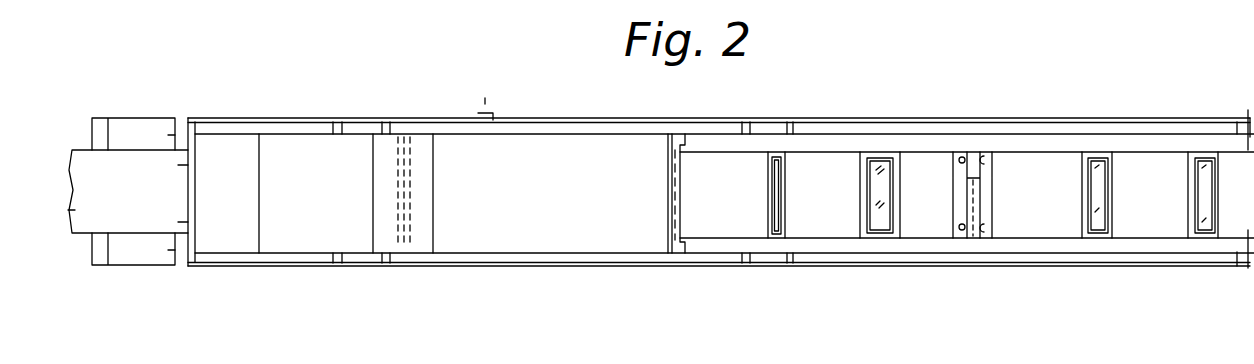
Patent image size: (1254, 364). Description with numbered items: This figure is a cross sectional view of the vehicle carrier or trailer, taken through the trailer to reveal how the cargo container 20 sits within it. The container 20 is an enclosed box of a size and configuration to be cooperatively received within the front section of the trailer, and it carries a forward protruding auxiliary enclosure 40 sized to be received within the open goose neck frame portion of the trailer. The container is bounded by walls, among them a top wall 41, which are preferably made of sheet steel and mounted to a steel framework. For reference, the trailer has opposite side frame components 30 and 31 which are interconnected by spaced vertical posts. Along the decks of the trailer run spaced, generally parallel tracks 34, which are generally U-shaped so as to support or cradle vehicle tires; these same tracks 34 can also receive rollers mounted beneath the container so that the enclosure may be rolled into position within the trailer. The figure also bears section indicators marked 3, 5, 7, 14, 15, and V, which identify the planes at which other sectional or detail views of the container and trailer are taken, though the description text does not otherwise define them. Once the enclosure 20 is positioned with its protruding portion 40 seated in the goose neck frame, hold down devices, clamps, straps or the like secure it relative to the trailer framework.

The forward protruding auxiliary enclosure 40 is at (315, 154).
The cargo container 20 is at (484, 138).
The top wall 41 is at (560, 210).
The wall 14 is at (332, 162).
The section line 7- 7 is at (238, 195).
The section line 5- 5 is at (600, 115).
The section line 3- 3 is at (670, 88).
The section line 15- 15 is at (603, 295).
The section line V- V is at (797, 158).
The side frame component 30 is at (878, 122).
The tracks 34 is at (1005, 140).
The side frame component 31 is at (900, 268).